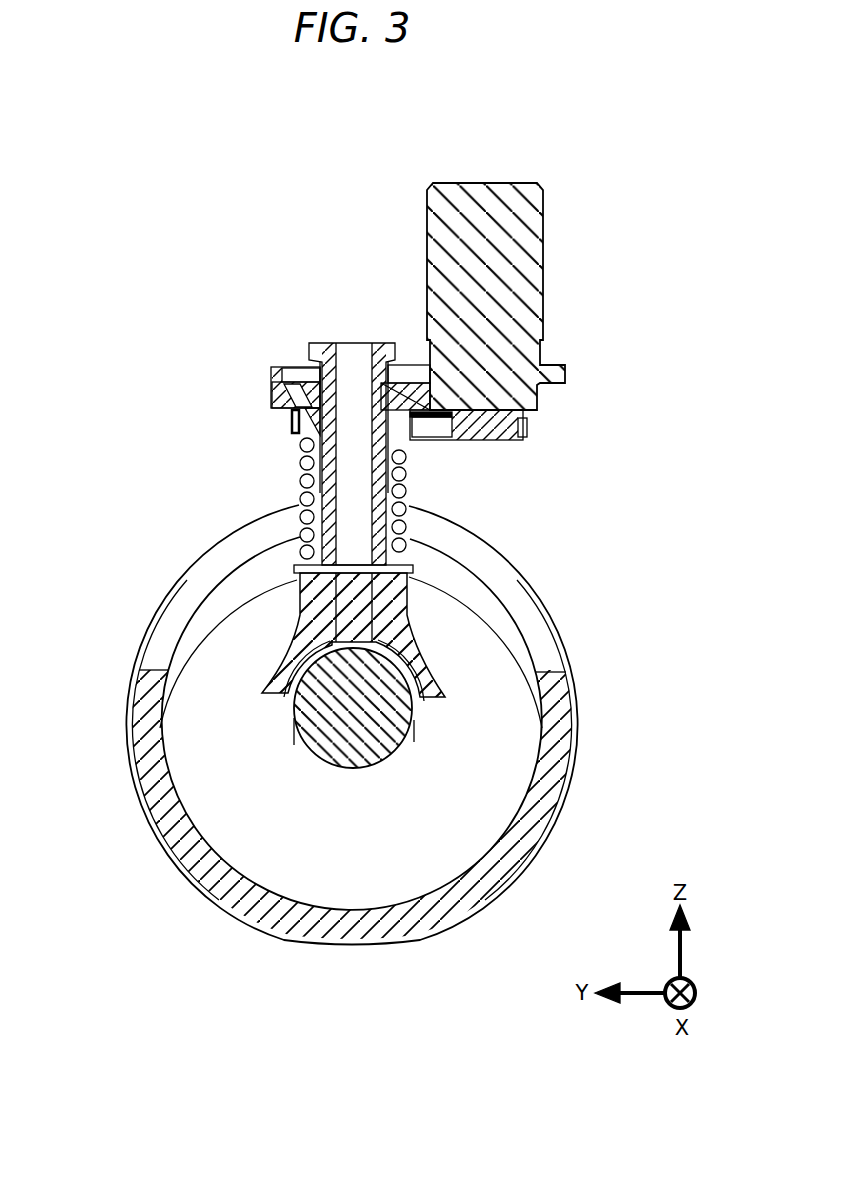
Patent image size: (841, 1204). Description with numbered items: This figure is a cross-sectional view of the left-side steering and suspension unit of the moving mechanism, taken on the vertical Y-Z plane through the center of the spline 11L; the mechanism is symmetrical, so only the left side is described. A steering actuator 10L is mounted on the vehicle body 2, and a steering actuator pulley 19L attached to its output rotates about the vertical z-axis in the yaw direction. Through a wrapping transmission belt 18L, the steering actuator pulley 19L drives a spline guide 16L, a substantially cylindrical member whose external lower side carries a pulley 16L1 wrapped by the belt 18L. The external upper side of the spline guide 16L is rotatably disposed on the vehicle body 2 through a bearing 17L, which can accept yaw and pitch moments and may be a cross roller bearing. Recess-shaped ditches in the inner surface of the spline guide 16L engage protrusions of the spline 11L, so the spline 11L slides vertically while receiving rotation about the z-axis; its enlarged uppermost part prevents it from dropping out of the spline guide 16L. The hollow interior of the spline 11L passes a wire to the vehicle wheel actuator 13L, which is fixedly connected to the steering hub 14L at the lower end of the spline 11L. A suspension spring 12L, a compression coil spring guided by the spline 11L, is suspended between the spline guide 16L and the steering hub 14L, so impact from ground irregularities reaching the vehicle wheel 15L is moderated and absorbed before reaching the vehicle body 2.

The vehicle body 2 is at (272, 367).
The steering actuator 10L is at (548, 258).
The spline 11L is at (342, 337).
The suspension spring 12L is at (297, 483).
The vehicle wheel actuator 13L is at (408, 748).
The steering hub 14L is at (437, 661).
The vehicle wheel 15L is at (576, 690).
The spline guide 16L is at (300, 437).
The pulley 16L1 is at (297, 452).
The bearing 17L is at (287, 420).
The wrapping transmission belt 18L is at (430, 438).
The steering actuator pulley 19L is at (502, 438).